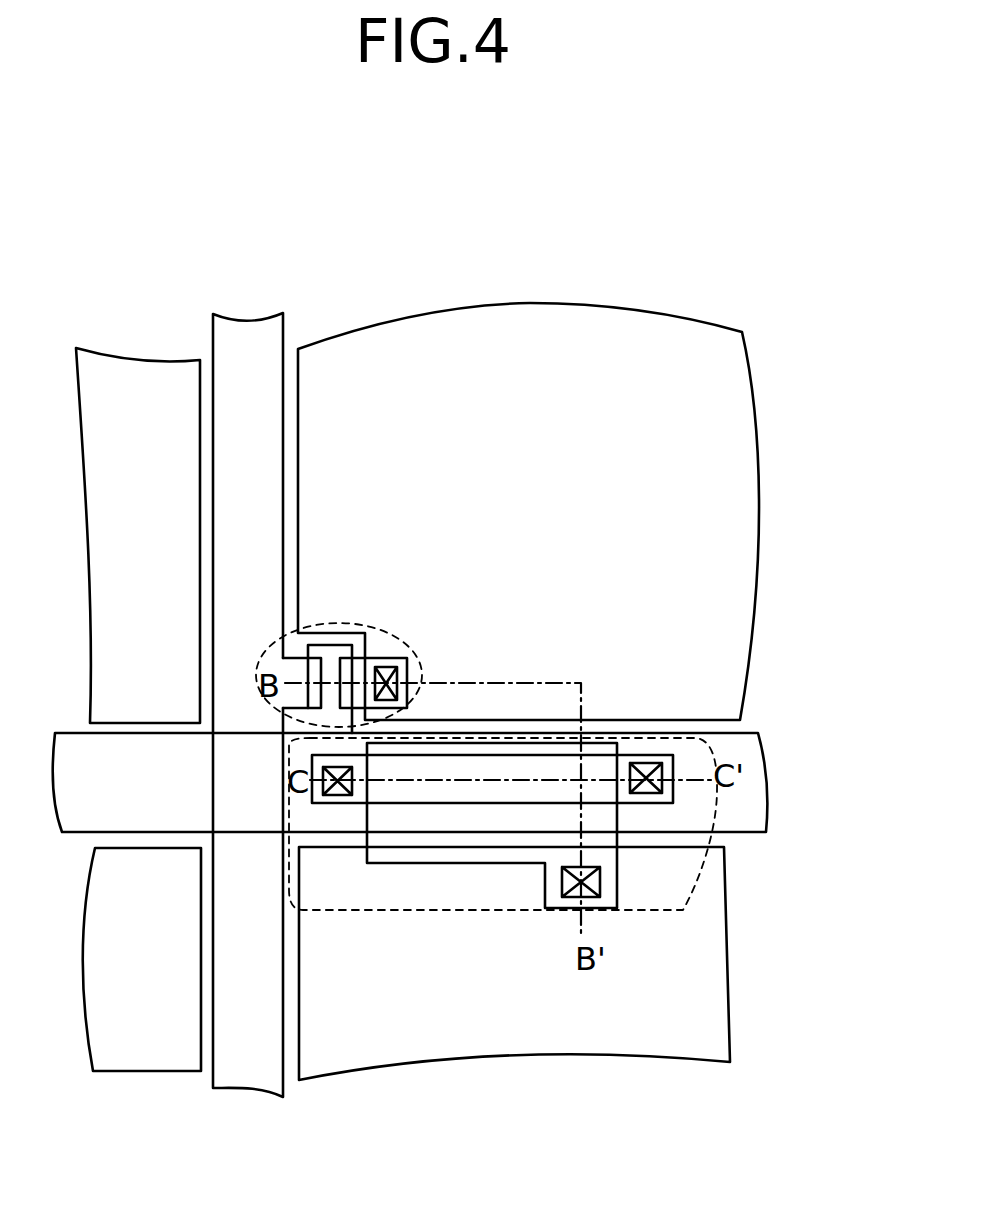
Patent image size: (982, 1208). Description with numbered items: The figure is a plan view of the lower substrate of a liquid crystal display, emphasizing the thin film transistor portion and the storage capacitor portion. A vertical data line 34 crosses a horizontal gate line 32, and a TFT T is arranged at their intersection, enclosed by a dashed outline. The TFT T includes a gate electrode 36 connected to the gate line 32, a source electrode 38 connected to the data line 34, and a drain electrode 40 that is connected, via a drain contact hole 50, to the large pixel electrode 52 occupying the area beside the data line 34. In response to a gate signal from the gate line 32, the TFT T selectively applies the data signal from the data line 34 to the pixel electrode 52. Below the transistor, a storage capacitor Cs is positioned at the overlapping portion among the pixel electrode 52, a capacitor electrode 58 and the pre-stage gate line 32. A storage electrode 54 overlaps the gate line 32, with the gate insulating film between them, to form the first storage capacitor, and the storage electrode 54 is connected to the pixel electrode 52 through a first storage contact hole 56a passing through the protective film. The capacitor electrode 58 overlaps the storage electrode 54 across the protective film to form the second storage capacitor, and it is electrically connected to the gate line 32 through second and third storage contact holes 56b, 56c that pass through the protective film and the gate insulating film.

The gate line 32 is at (742, 797).
The data line 34 is at (248, 342).
The gate electrode 36 is at (335, 657).
The source electrode 38 is at (300, 663).
The drain electrode 40 is at (383, 657).
The drain contact hole 50 is at (395, 682).
The pixel electrode 52 is at (712, 392).
The storage electrode 54 is at (468, 858).
The first storage contact hole 56a is at (582, 897).
The second storage contact hole 56b is at (333, 796).
The third storage contact hole 56c is at (652, 795).
The capacitor electrode 58 is at (675, 760).
The thin film transistor T is at (257, 677).
The storage capacitor Cs is at (680, 910).